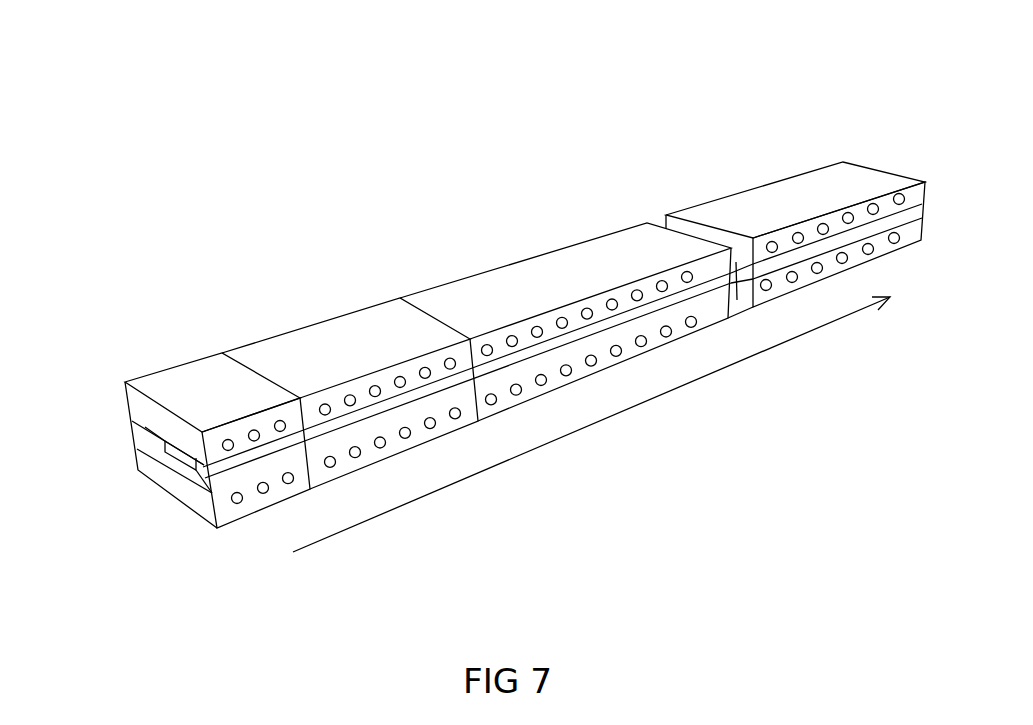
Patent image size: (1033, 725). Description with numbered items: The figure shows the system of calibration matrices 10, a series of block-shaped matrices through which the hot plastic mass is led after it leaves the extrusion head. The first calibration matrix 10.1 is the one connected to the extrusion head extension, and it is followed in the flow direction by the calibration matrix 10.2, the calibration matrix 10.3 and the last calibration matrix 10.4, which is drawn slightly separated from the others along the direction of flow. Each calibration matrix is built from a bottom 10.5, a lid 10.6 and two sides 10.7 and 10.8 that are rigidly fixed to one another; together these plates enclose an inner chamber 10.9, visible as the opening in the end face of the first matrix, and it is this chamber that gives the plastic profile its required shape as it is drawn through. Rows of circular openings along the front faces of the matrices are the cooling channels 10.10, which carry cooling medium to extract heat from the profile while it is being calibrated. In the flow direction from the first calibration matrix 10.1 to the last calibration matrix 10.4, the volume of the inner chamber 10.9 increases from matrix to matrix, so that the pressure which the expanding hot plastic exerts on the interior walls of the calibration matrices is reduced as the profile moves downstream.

The system of calibration matrices 10 is at (481, 340).
The calibration matrix 10.1 is at (175, 432).
The calibration matrix 10.2 is at (326, 347).
The calibration matrix 10.3 is at (514, 285).
The calibration matrix 10.4 is at (770, 200).
The bottom 10.5 is at (160, 477).
The lid 10.6 is at (197, 445).
The side 10.7 is at (200, 478).
The side 10.8 is at (133, 428).
The inner chamber 10.9 is at (170, 448).
The cooling channels 10.10 is at (772, 246).